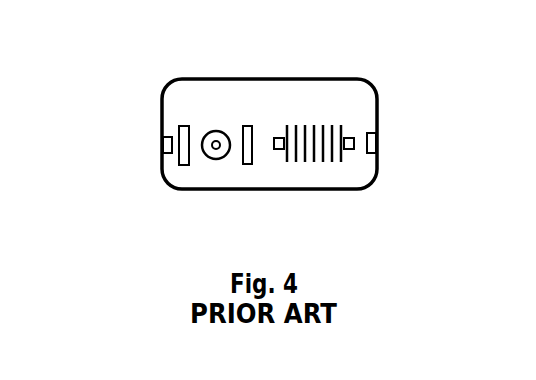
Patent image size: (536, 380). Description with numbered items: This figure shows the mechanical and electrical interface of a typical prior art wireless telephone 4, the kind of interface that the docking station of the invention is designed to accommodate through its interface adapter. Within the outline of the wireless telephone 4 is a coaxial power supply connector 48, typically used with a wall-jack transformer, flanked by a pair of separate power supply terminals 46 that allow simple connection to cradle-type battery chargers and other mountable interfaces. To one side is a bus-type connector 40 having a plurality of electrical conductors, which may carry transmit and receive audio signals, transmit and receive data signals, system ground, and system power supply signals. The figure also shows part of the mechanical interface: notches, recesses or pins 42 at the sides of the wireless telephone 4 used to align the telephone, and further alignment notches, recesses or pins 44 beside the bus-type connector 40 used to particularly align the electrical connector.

The wireless telephone 4 is at (161, 97).
The bus-type connector 40 is at (287, 120).
The alignment notches, recesses or pins 42 is at (163, 144).
The alignment notches, recesses or pins 44 is at (349, 150).
The power supply terminals 46 is at (248, 125).
The coaxial power supply connector 48 is at (223, 158).